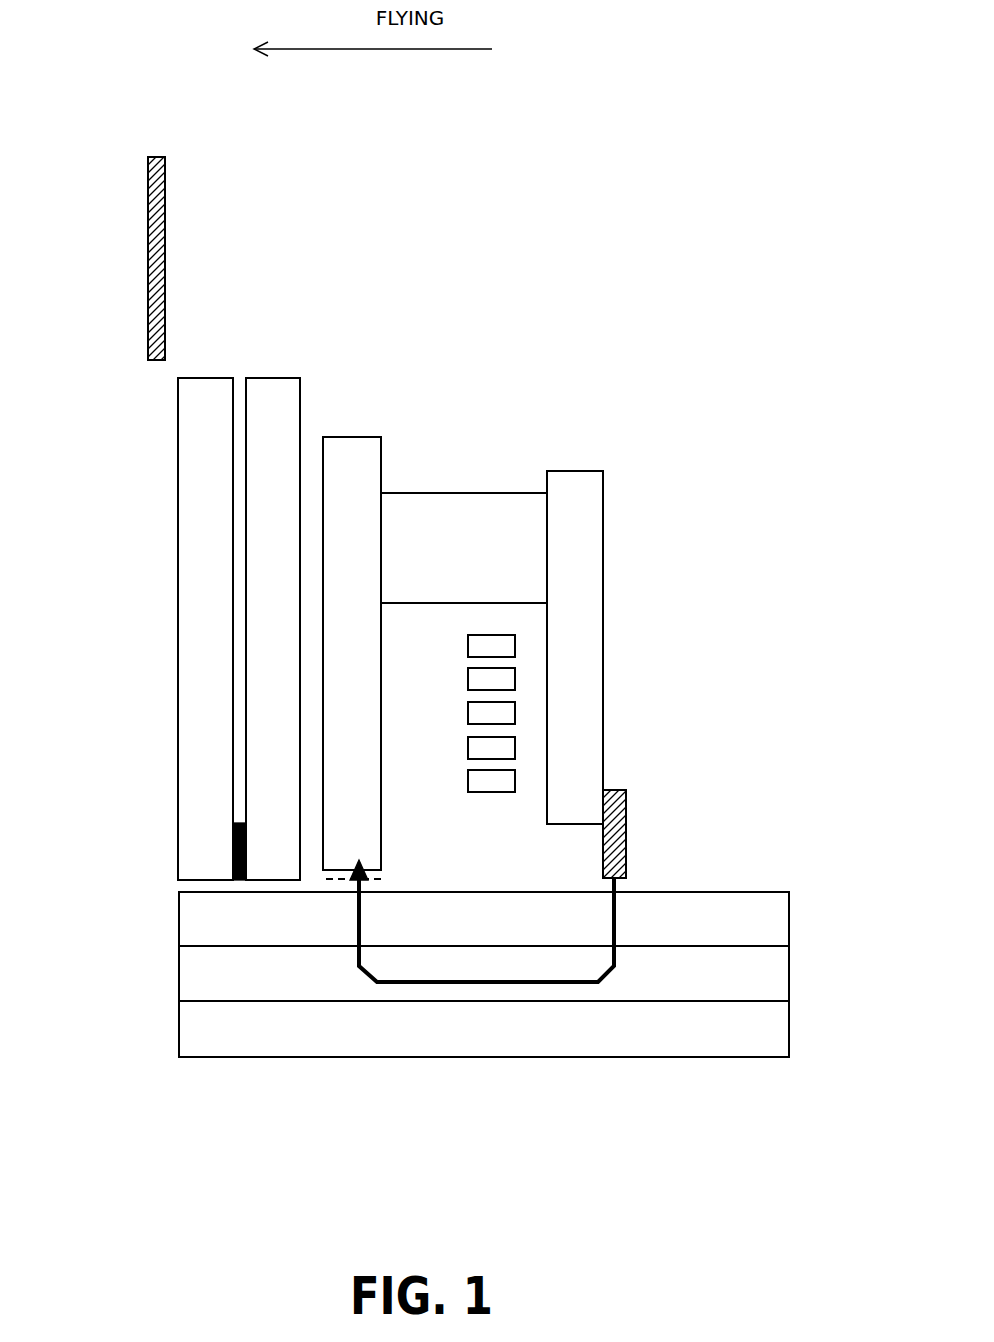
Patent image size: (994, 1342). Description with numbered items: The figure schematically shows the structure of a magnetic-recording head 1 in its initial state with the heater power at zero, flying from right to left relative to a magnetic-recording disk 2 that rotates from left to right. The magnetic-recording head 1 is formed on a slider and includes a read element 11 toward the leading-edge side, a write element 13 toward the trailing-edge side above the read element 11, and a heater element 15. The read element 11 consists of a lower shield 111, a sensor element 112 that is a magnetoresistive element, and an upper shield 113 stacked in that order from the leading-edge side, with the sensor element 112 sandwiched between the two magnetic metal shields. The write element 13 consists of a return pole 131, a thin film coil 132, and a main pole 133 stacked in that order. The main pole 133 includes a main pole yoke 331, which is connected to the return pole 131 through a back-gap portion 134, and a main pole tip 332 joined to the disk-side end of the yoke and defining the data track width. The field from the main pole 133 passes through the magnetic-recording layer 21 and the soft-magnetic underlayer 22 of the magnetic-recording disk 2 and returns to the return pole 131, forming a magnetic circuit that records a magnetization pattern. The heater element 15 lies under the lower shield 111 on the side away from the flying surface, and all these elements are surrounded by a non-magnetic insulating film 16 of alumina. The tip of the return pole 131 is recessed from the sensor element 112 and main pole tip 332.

The magnetic-recording head 1 is at (513, 158).
The magnetic-recording disk 2 is at (224, 1103).
The read element 11 is at (238, 328).
The write element 13 is at (490, 385).
The heater element 15 is at (166, 162).
The non-magnetic insulating film 16 is at (658, 415).
The magnetic-recording layer 21 is at (178, 925).
The soft-magnetic underlayer 22 is at (178, 972).
The lower shield 111 is at (177, 460).
The sensor element 112 is at (233, 850).
The upper shield 113 is at (288, 378).
The return pole 131 is at (382, 452).
The thin film coil 132 is at (467, 646).
The main pole 133 is at (646, 652).
The back-gap portion 134 is at (500, 492).
The main pole yoke 331 is at (604, 550).
The main pole tip 332 is at (627, 831).